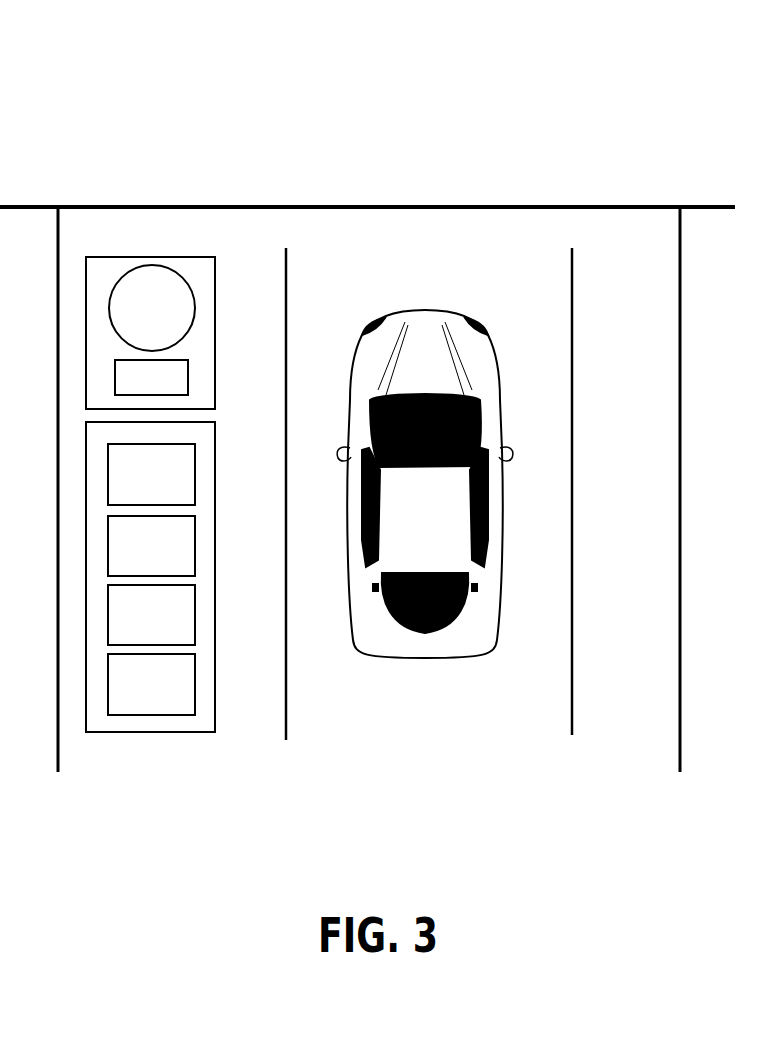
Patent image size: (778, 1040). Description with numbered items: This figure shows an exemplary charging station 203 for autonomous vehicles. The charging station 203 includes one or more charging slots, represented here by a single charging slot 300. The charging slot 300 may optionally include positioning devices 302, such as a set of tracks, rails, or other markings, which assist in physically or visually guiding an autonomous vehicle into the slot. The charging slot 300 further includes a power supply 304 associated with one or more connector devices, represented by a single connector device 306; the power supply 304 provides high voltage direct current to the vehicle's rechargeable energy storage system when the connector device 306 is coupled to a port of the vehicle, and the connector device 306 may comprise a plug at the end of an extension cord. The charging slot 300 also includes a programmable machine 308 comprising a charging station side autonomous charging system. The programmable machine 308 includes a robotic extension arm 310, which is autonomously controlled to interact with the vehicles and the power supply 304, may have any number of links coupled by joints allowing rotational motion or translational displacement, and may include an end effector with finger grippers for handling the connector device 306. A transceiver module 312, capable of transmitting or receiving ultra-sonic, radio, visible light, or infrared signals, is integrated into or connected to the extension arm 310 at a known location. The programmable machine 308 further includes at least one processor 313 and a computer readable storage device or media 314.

The charging station 203 is at (148, 103).
The charging slot 300 is at (343, 205).
The positioning devices 302 is at (287, 712).
The power supply 304 is at (134, 320).
The connector device 306 is at (134, 389).
The programmable machine 308 is at (157, 732).
The robotic extension arm 310 is at (134, 486).
The transceiver module 312 is at (134, 696).
The processor 313 is at (134, 557).
The computer readable storage device or media 314 is at (134, 626).